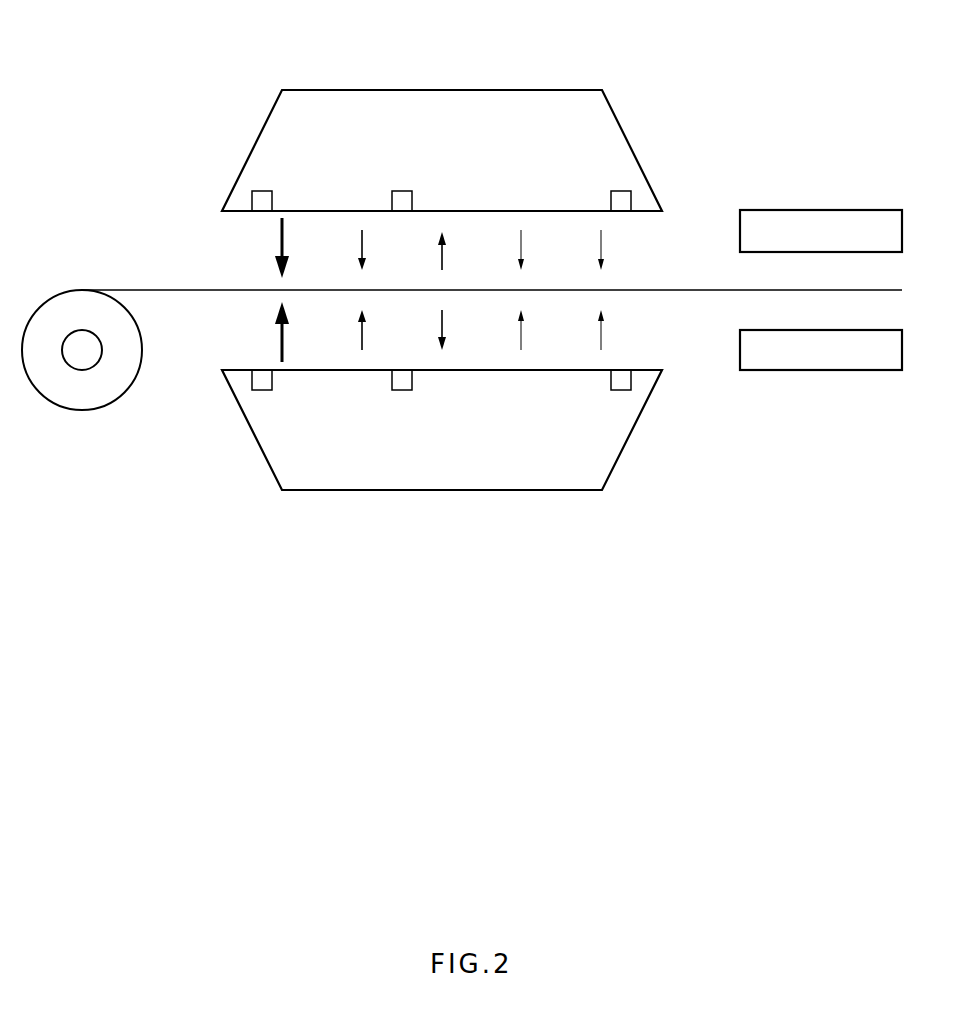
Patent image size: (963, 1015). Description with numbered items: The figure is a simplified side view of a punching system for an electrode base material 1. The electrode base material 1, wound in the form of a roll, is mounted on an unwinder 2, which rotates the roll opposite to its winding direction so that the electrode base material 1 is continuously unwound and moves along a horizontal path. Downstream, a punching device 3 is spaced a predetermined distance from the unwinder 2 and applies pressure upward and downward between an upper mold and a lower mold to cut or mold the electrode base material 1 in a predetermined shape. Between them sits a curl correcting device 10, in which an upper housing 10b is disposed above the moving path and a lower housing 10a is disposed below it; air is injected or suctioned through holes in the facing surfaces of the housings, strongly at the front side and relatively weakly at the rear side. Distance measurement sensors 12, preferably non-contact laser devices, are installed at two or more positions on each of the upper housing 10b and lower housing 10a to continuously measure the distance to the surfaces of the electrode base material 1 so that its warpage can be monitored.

The electrode base material 1 is at (82, 288).
The unwinder 2 is at (82, 412).
The punching device 3 is at (828, 178).
The curl correcting device 10 is at (448, 286).
The lower housing 10a is at (440, 492).
The upper housing 10b is at (440, 88).
The distance measurement sensor 12 is at (618, 190).